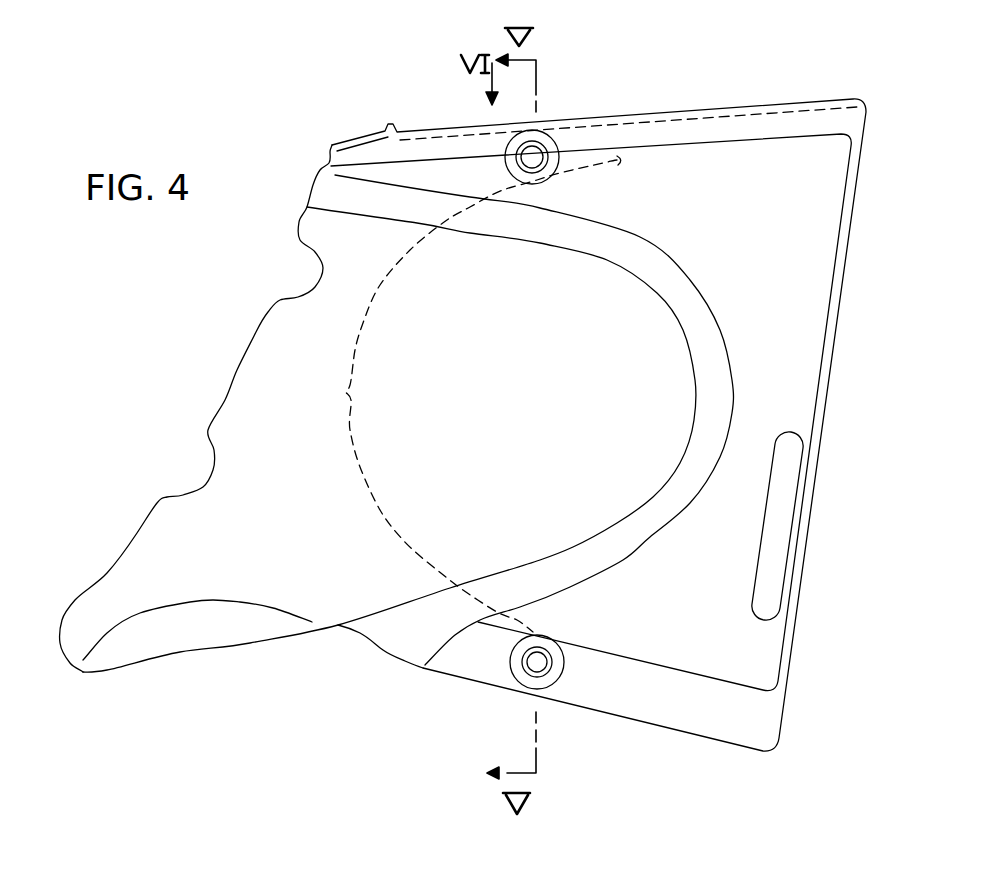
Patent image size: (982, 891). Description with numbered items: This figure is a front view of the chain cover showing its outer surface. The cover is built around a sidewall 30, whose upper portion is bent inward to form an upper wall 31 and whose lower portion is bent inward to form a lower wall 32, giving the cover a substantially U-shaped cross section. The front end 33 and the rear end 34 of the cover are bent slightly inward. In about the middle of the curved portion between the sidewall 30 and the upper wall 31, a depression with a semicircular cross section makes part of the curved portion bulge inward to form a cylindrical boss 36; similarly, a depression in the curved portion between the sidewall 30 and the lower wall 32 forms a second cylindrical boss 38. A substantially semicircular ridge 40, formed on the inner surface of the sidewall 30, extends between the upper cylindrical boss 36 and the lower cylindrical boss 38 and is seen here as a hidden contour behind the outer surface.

The sidewall 30 is at (777, 363).
The upper wall 31 is at (743, 105).
The lower wall 32 is at (613, 713).
The front end 33 is at (223, 395).
The rear end 34 is at (815, 480).
The cylindrical boss 36 is at (552, 143).
The cylindrical boss 38 is at (522, 677).
The substantially semicircular ridge 40 is at (352, 350).